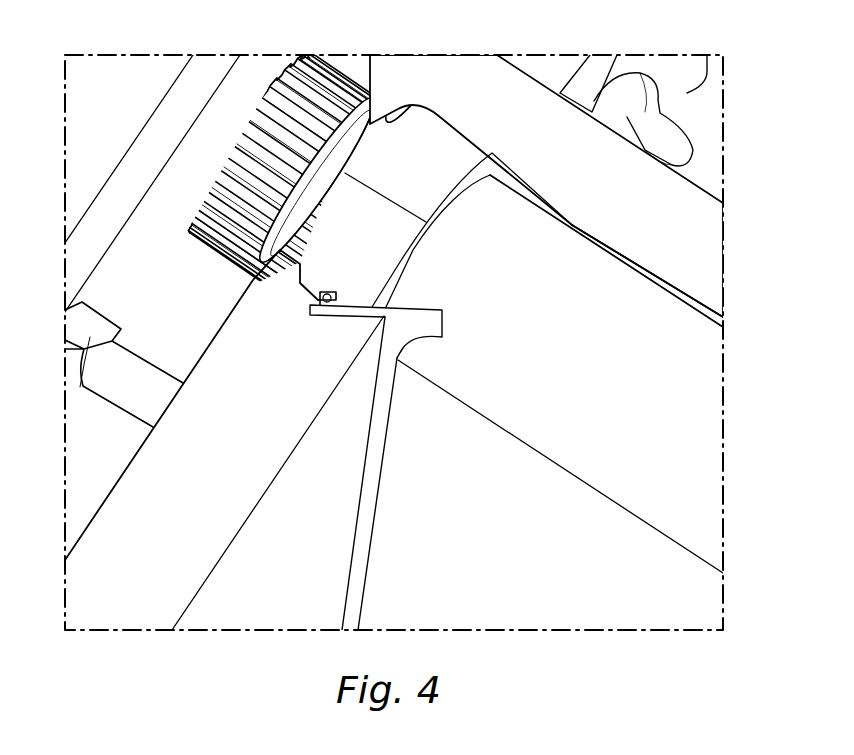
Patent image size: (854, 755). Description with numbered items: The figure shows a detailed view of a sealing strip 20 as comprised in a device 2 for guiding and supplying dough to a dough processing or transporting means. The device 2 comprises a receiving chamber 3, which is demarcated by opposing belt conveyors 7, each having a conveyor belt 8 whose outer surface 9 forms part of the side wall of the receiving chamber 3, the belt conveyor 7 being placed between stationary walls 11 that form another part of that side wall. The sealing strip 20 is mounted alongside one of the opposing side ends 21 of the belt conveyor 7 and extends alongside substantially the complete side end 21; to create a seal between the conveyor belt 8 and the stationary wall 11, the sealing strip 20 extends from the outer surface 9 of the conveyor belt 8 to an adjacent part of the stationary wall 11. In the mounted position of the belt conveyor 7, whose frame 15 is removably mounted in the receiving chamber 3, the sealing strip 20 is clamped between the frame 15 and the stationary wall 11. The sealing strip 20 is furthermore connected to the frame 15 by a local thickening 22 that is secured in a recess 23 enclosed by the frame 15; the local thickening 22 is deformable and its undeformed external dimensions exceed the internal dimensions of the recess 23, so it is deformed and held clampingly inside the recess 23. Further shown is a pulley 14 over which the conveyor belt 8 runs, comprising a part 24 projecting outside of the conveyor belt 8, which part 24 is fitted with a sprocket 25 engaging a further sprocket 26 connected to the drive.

The device for guiding and supplying dough 2 is at (142, 240).
The receiving chamber 3 is at (549, 508).
The belt conveyor 7 is at (612, 238).
The conveyor belt 8 is at (658, 330).
The outer surface 9 is at (541, 588).
The stationary wall 11 is at (236, 458).
The pulley 14 is at (340, 158).
The frame 15 is at (392, 238).
The sealing strip 20 is at (363, 527).
The side end 21 is at (396, 435).
The local thickening 22 is at (327, 290).
The recess 23 is at (367, 295).
The projecting part 24 is at (275, 187).
The sprocket 25 is at (230, 140).
The further sprocket 26 is at (435, 80).